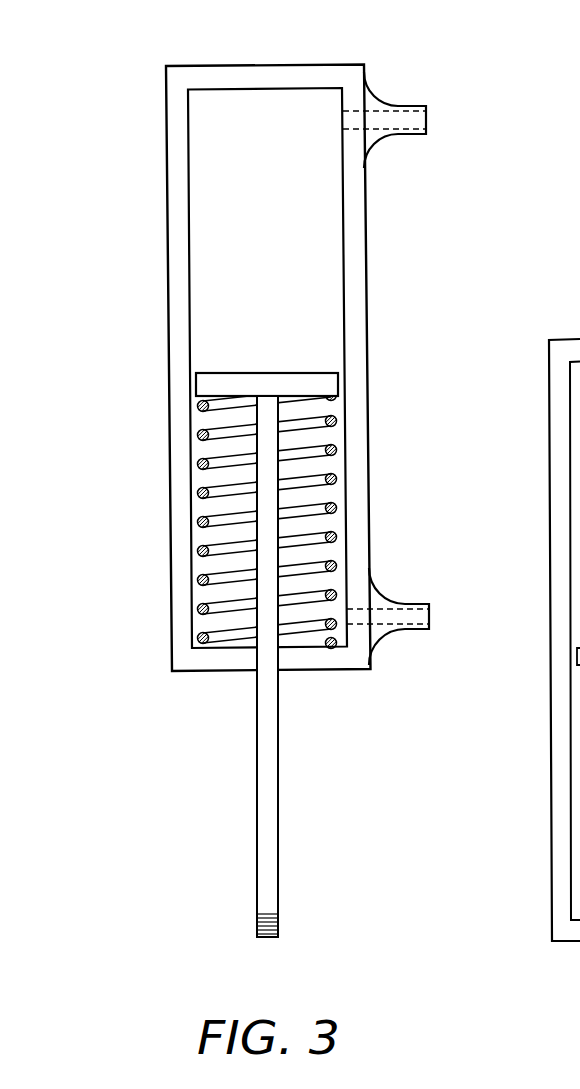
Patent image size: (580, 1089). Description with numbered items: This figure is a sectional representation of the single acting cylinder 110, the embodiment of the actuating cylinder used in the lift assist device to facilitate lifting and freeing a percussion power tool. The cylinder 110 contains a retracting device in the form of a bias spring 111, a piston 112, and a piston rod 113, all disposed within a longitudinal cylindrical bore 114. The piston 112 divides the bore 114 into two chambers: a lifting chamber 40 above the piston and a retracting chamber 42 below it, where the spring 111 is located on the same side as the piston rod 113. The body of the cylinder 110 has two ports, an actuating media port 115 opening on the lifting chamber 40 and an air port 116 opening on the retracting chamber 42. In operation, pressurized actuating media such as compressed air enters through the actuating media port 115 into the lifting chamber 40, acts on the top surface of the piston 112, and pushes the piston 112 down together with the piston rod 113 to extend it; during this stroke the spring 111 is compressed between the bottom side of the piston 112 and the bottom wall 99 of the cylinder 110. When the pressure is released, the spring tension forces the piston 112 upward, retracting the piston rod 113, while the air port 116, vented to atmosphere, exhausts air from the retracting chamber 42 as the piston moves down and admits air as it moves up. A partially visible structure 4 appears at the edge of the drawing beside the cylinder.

The single acting cylinder 110 is at (296, 498).
The bottom wall 99 is at (168, 660).
The cylindrical bore 114 is at (167, 187).
The lifting chamber 40 is at (315, 248).
The actuating media port 115 is at (427, 120).
The air port 116 is at (430, 616).
The retracting chamber 42 is at (330, 518).
The bias spring 111 is at (325, 450).
The piston 112 is at (310, 372).
The piston rod 113 is at (281, 791).
The adjacent housing (partial) 4 is at (579, 320).